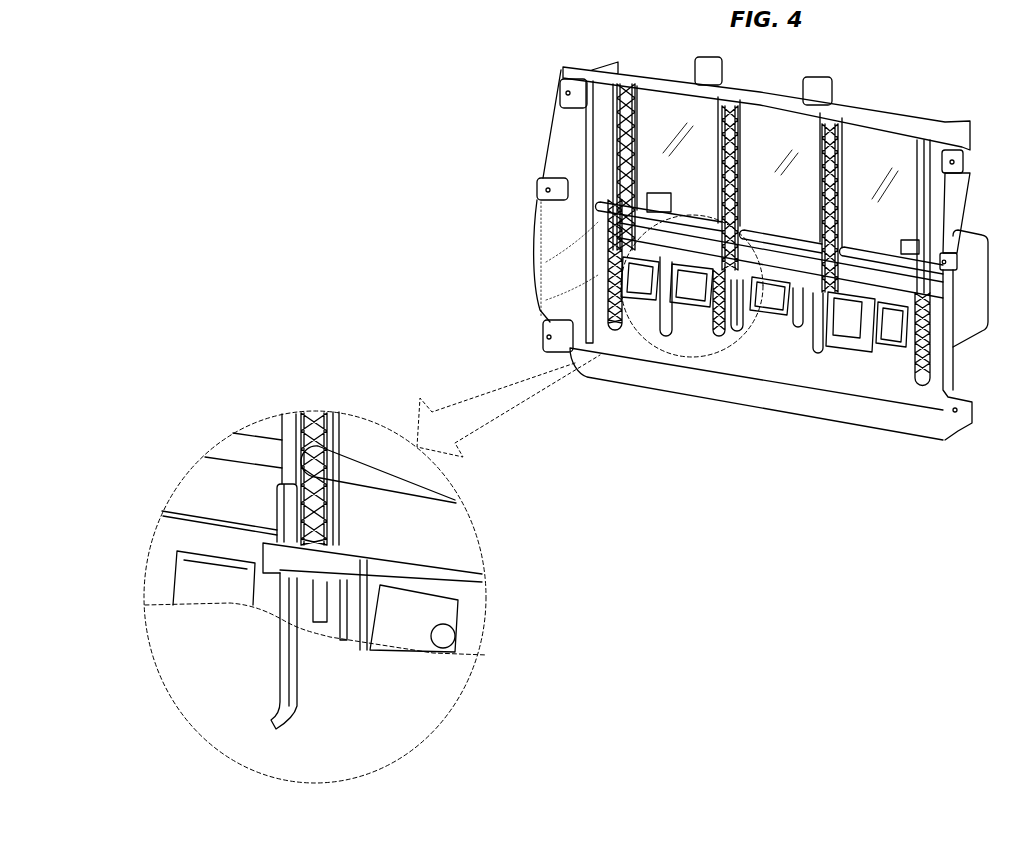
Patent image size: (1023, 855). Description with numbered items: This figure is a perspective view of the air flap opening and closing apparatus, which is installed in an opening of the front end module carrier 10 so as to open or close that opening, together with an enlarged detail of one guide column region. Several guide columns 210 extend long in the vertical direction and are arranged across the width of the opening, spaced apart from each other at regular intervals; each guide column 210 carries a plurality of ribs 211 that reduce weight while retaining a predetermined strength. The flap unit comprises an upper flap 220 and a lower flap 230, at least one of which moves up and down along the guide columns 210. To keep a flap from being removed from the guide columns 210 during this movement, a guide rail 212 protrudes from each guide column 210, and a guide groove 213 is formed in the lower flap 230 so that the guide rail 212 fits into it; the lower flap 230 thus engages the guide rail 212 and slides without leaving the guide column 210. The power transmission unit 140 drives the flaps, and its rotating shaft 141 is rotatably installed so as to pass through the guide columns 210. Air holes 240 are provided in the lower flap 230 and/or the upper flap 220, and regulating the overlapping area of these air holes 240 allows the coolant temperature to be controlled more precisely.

The carrier 10 is at (876, 117).
The power transmission unit 140 is at (558, 338).
The rotating shaft 141 is at (604, 214).
The guide column 210 is at (592, 146).
The rib 211 is at (617, 107).
The guide rail 212 is at (695, 350).
The guide groove 213 is at (297, 697).
The upper flap 220 is at (767, 123).
The lower flap 230 is at (823, 373).
The air hole 240 is at (455, 650).